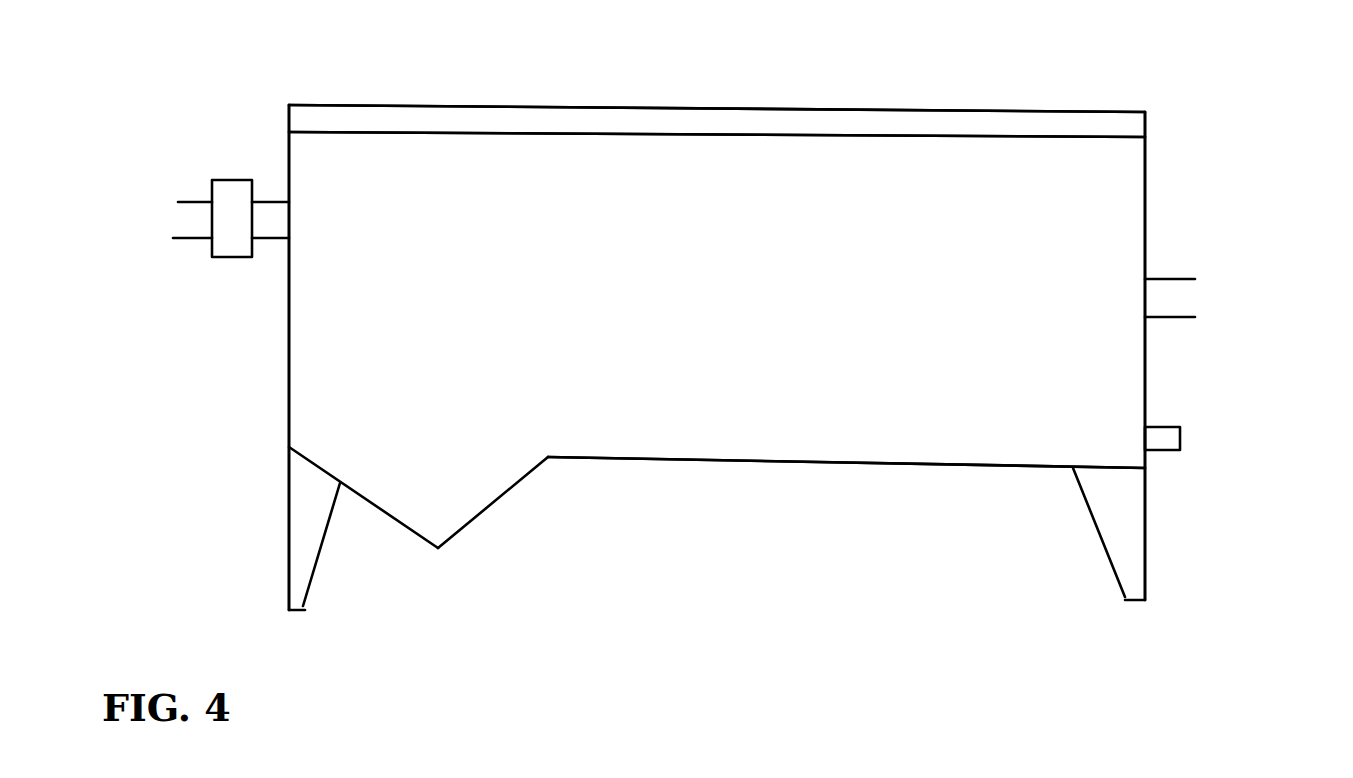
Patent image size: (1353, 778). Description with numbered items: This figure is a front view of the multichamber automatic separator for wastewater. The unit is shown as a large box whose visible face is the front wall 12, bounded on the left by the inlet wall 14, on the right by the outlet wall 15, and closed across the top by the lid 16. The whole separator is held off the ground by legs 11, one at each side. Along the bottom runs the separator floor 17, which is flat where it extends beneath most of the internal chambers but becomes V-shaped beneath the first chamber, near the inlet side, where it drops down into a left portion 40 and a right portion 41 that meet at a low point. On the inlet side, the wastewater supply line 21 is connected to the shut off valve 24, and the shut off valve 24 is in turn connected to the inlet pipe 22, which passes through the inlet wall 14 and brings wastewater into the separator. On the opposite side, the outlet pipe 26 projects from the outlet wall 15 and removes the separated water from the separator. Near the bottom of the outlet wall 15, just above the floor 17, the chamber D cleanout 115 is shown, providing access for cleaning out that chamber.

The legs 11 is at (287, 538).
The front wall 12 is at (493, 190).
The inlet wall 14 is at (289, 373).
The outlet wall 15 is at (1145, 200).
The lid 16 is at (682, 107).
The separator floor 17 is at (846, 513).
The wastewater supply line 21 is at (175, 237).
The inlet pipe 22 is at (270, 202).
The shut off valve 24 is at (228, 180).
The outlet pipe 26 is at (1190, 313).
The left portion 40 is at (363, 544).
The right portion 41 is at (502, 538).
The chamber D cleanout 115 is at (1180, 450).